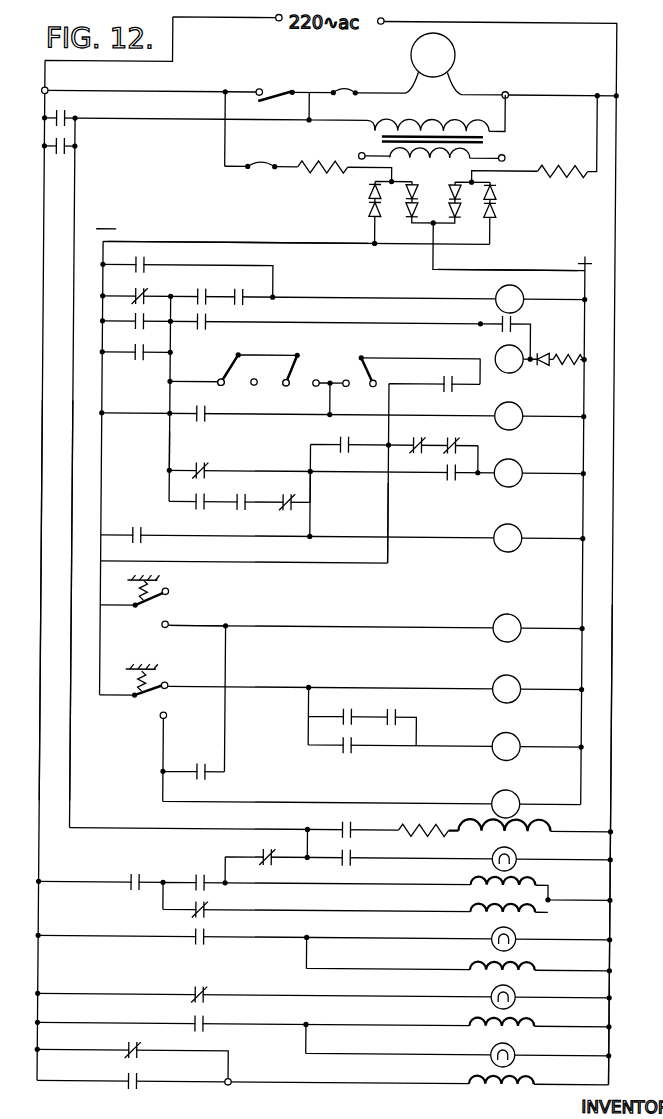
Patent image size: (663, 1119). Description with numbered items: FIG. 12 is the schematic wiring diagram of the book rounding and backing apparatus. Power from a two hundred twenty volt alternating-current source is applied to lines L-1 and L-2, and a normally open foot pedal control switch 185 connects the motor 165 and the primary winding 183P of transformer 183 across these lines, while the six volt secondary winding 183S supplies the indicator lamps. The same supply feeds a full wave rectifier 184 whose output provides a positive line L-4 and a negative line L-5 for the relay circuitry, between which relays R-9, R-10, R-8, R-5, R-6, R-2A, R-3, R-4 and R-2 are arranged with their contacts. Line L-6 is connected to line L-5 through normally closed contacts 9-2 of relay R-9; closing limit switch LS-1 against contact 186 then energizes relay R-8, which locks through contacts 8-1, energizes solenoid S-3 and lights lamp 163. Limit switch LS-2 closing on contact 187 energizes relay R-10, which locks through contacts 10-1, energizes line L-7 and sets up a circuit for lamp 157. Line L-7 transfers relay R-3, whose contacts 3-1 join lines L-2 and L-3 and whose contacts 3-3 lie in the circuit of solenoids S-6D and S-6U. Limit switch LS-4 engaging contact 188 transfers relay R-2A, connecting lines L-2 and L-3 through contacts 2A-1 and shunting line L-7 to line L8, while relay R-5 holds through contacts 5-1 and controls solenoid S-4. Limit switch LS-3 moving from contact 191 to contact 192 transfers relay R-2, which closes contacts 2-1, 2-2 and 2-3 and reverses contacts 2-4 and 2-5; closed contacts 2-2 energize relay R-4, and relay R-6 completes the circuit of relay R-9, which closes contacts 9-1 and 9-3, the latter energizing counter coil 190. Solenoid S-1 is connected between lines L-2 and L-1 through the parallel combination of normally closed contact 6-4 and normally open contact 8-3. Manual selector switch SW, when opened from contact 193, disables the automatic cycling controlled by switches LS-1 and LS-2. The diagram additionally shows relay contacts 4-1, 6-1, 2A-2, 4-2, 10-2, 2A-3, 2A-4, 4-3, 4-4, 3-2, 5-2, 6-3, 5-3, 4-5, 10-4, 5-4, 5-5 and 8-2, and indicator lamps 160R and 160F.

The motor 165 is at (451, 60).
The foot pedal control switch 185 is at (290, 80).
The transformer 183 is at (440, 117).
The primary winding 183P is at (469, 125).
The secondary winding 183S is at (418, 162).
The full wave rectifier 184 is at (352, 218).
The line L-1 is at (617, 210).
The line L-2 is at (45, 208).
The line L-3 is at (76, 204).
The positive line L-4 is at (559, 269).
The negative line L-5 is at (259, 242).
The line L-6 is at (173, 447).
The line L-7 is at (392, 526).
The line L8 is at (326, 474).
The contacts 2A-1 is at (63, 107).
The contacts 3-1 is at (64, 154).
The contacts 9-1 is at (146, 266).
The contacts 9-2 is at (146, 297).
The relay contact 4-1 is at (201, 293).
The relay contact 6-1 is at (248, 293).
The relay contact 2A-2 is at (140, 328).
The contacts 10-1 is at (209, 322).
The relay contact 4-2 is at (138, 358).
The manual selector switch SW is at (233, 369).
The contact 193 is at (224, 384).
The limit switch LS-1 is at (288, 385).
The contact 186 is at (326, 385).
The contact 187 is at (349, 384).
The limit switch LS-2 is at (366, 363).
The contacts 8-1 is at (209, 410).
The relay contact 10-2 is at (447, 375).
The relay R-9 is at (505, 291).
The relay R-10 is at (522, 352).
The relay R-8 is at (520, 416).
The relay contact 2A-3 is at (334, 440).
The relay contact 2A-4 is at (428, 436).
The relay contact 4-3 is at (454, 443).
The relay contact 4-4 is at (209, 463).
The holding contacts 5-1 is at (452, 478).
The relay R-5 is at (520, 466).
The contacts 2-1 is at (206, 508).
The relay contact 3-2 is at (245, 496).
The relay contact 5-2 is at (285, 510).
The relay contact 6-3 is at (152, 530).
The relay R-6 is at (522, 531).
The limit switch LS-4 is at (170, 602).
The contact 188 is at (171, 629).
The limit switch LS-3 is at (140, 700).
The contact 191 is at (170, 682).
The contact 192 is at (178, 710).
The contacts 2-3 is at (209, 762).
The relay R-2A is at (528, 613).
The relay R-3 is at (527, 672).
The contacts 2-2 is at (354, 712).
The relay contact 5-3 is at (398, 712).
The relay contact 4-5 is at (351, 750).
The relay R-4 is at (528, 734).
The relay R-2 is at (527, 790).
The contacts 9-3 is at (354, 828).
The coil 190 is at (553, 824).
The relay contact 10-4 is at (348, 863).
The lamp 157 is at (526, 850).
The contacts 3-3 is at (149, 877).
The contacts 2-4 is at (213, 877).
The contacts 2-5 is at (216, 903).
The solenoid S-6U is at (474, 884).
The solenoid S-6D is at (474, 908).
The relay contact 5-4 is at (202, 944).
The indicator lamp 160R is at (521, 932).
The solenoid S-4 is at (542, 962).
The relay contact 5-5 is at (194, 991).
The indicator lamp 160F is at (521, 990).
The relay contact 8-2 is at (208, 1018).
The solenoid S-3 is at (542, 1017).
The contact 6-4 is at (143, 1044).
The lamp 163 is at (499, 1049).
The contact 8-3 is at (137, 1090).
The solenoid S-1 is at (512, 1080).